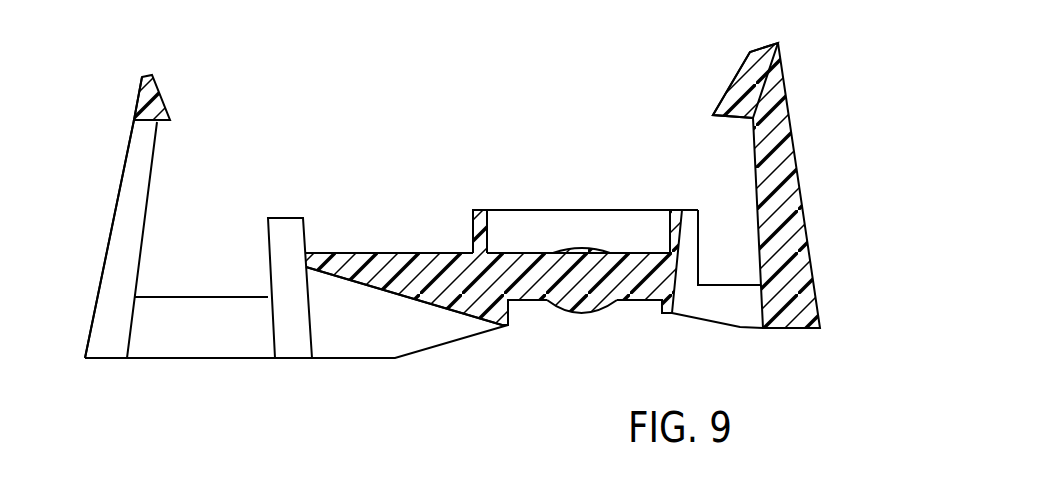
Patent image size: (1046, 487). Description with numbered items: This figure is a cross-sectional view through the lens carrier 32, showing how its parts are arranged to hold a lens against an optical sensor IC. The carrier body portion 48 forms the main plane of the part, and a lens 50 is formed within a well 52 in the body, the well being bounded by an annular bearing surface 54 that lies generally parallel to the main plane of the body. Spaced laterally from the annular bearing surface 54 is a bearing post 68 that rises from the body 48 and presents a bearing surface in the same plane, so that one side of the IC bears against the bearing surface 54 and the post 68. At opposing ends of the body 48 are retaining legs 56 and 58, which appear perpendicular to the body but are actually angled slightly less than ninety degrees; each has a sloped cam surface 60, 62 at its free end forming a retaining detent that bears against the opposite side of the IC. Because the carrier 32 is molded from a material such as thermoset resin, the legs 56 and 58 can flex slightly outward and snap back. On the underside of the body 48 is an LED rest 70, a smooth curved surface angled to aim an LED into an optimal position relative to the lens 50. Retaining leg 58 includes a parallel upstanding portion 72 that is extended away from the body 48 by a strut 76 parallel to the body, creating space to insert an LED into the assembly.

The lens carrier 32 is at (392, 110).
The carrier body portion 48 is at (447, 285).
The lens 50 is at (578, 320).
The well 52 is at (472, 233).
The annular bearing surface 54 is at (483, 212).
The retaining leg 56 is at (790, 165).
The retaining leg 58 is at (127, 152).
The sloped cam surface 60 is at (730, 85).
The sloped cam surface 62 is at (156, 102).
The bearing post 68 is at (285, 218).
The LED rest 70 is at (400, 290).
The upstanding portion 72 is at (122, 242).
The strut 76 is at (200, 337).